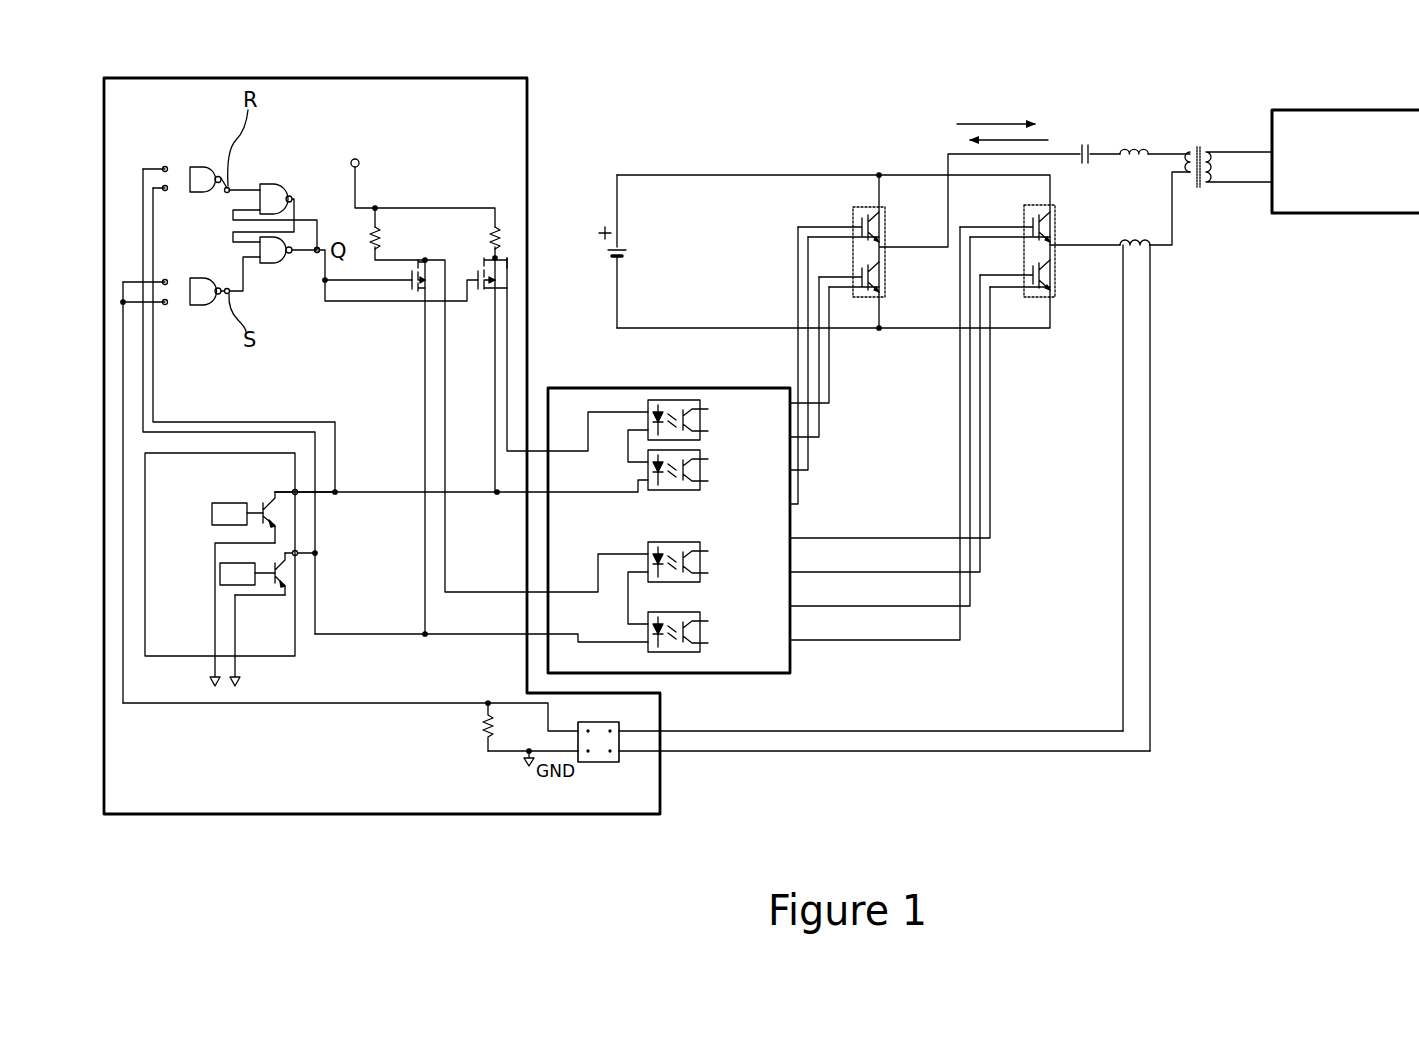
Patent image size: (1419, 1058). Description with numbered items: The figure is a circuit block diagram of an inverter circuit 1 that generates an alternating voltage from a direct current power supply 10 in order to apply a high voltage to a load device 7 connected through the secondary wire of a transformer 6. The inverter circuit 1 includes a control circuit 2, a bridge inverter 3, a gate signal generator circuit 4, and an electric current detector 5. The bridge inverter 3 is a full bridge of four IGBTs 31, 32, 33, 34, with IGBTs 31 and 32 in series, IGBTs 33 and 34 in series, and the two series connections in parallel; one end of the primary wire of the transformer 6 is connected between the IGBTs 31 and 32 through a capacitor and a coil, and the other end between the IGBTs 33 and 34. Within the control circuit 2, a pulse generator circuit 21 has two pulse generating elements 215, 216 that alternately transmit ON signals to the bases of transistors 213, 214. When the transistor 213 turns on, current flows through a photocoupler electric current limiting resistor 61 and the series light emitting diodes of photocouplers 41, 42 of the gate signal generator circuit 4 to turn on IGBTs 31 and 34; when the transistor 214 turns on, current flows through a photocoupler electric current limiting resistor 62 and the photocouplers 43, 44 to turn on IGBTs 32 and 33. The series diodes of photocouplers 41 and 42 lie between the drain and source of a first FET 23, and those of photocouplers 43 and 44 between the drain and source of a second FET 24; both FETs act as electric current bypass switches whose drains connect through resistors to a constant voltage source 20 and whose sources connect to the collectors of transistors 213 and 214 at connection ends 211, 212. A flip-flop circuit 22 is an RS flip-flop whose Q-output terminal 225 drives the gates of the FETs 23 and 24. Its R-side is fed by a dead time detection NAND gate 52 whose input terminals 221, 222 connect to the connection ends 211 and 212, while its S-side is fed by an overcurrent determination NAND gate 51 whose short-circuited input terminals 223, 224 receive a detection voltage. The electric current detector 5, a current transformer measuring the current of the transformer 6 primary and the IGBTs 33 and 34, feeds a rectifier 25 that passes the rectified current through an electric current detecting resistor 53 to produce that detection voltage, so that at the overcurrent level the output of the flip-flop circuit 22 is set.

The inverter circuit 1 is at (1240, 70).
The control circuit 2 is at (258, 78).
The bridge inverter 3 is at (972, 100).
The gate signal generator circuit 4 is at (572, 388).
The electric current detector 5 is at (1152, 255).
The transformer 6 is at (1198, 148).
The load device 7 is at (1330, 110).
The direct current power supply 10 is at (613, 260).
The constant voltage source 20 is at (358, 158).
The pulse generator circuit 21 is at (173, 656).
The flip-flop circuit 22 is at (284, 150).
The first field effect transistor 23 is at (482, 279).
The second field effect transistor 24 is at (420, 262).
The rectifier 25 is at (604, 763).
The IGBT 31 is at (866, 207).
The IGBT 32 is at (882, 292).
The IGBT 33 is at (1040, 205).
The IGBT 34 is at (1052, 297).
The first photocoupler 41 is at (672, 400).
The second photocoupler 42 is at (656, 491).
The third photocoupler 43 is at (693, 542).
The fourth photocoupler 44 is at (697, 652).
The overcurrent determination NAND gate 51 is at (207, 305).
The dead time detection NAND gate 52 is at (198, 167).
The electric current detecting resistor 53 is at (484, 740).
The photocoupler electric current limiting resistor 61 is at (496, 227).
The photocoupler electric current limiting resistor 62 is at (379, 228).
The connection end 211 is at (294, 489).
The connection end 212 is at (296, 556).
The transistor 213 is at (260, 507).
The transistor 214 is at (278, 590).
The pulse generating element 215 is at (212, 512).
The pulse generating element 216 is at (220, 574).
The input terminal 221 is at (166, 191).
The input terminal 222 is at (165, 166).
The input terminal 223 is at (166, 305).
The input terminal 224 is at (165, 280).
The Q-output terminal 225 is at (314, 254).